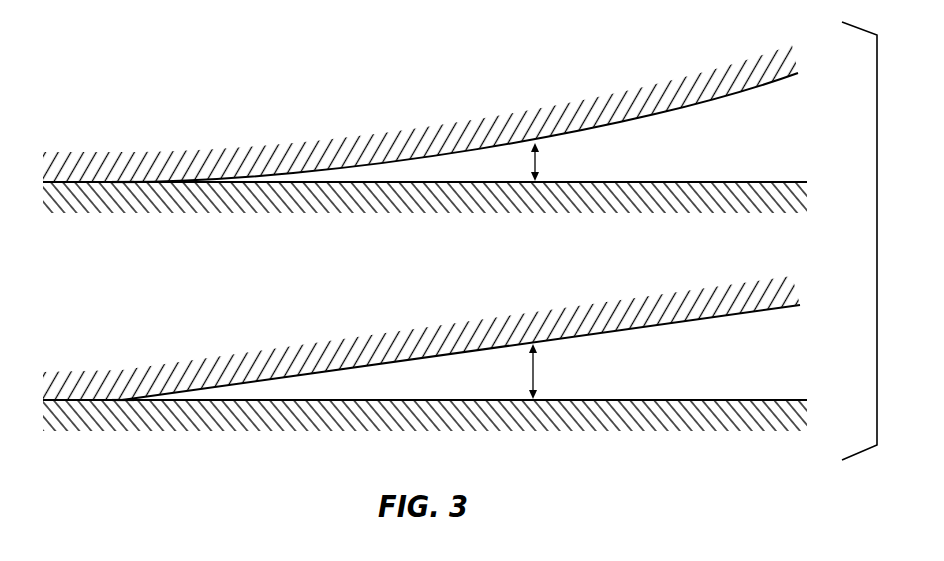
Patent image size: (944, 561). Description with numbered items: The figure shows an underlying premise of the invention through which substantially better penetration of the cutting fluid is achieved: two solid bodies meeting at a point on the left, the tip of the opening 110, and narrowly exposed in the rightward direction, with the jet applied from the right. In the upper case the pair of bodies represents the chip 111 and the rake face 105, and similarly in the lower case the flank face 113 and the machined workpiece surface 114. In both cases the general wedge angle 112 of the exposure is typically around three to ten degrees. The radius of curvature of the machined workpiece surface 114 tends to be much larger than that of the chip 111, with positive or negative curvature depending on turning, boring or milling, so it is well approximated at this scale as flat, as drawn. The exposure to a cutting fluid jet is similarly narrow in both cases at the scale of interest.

The rake face 105 is at (685, 183).
The tip of the opening 110 is at (122, 181).
The chip 111 is at (727, 93).
The wedge angle 112 is at (540, 161).
The flank face 113 is at (725, 312).
The machined workpiece surface 114 is at (707, 401).